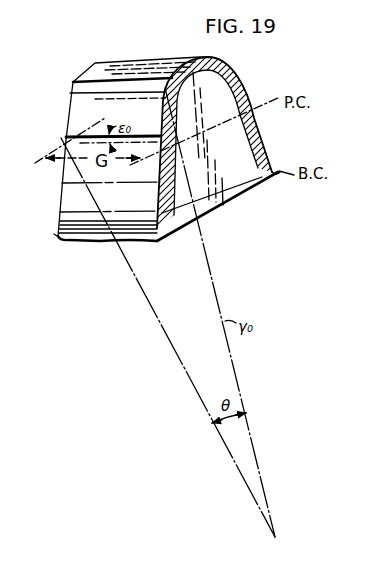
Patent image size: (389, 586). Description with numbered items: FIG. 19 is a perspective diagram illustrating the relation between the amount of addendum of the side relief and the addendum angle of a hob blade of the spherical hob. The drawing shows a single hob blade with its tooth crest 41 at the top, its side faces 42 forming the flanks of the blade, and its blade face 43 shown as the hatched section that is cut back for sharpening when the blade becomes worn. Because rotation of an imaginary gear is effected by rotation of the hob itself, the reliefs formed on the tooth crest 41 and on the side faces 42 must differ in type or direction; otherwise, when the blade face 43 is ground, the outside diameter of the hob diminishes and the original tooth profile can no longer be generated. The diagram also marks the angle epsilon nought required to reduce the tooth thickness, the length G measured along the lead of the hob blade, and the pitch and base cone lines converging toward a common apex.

The tooth crest 41 is at (147, 64).
The side faces 42 is at (64, 191).
The blade face 43 is at (236, 141).